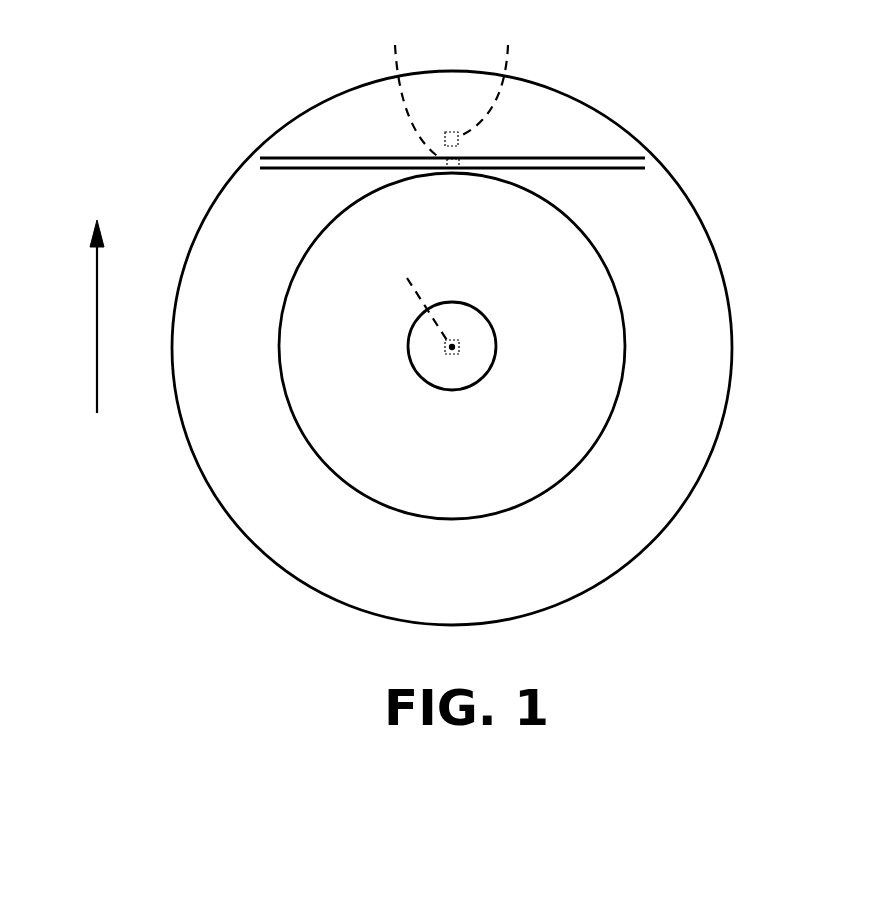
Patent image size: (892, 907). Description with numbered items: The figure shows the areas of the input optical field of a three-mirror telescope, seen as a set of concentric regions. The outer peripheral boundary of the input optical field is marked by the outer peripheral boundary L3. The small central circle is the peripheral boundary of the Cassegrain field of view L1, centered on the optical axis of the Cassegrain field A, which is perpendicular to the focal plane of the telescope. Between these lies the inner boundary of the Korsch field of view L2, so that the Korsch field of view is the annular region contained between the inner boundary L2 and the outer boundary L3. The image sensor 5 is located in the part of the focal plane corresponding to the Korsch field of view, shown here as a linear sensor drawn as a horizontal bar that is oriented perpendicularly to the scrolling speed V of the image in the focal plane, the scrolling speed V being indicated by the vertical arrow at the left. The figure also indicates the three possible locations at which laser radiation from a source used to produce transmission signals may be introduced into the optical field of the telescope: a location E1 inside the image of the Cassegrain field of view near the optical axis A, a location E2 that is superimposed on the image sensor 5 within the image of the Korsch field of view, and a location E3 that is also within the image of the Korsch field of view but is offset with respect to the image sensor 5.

The image sensor 5 is at (562, 160).
The peripheral boundary of the Cassegrain field of view L1 is at (490, 322).
The inner boundary of the Korsch field of view L2 is at (623, 322).
The outer peripheral boundary of the input optical field L3 is at (732, 322).
The location inside the image of the Cassegrain field of view E1 is at (419, 296).
The location superimposed on the image sensor within the Korsch field of view E2 is at (408, 86).
The location within the Korsch field of view offset from the image sensor E3 is at (486, 80).
The optical axis of the Cassegrain field A is at (452, 347).
The scrolling speed of the image V is at (85, 316).